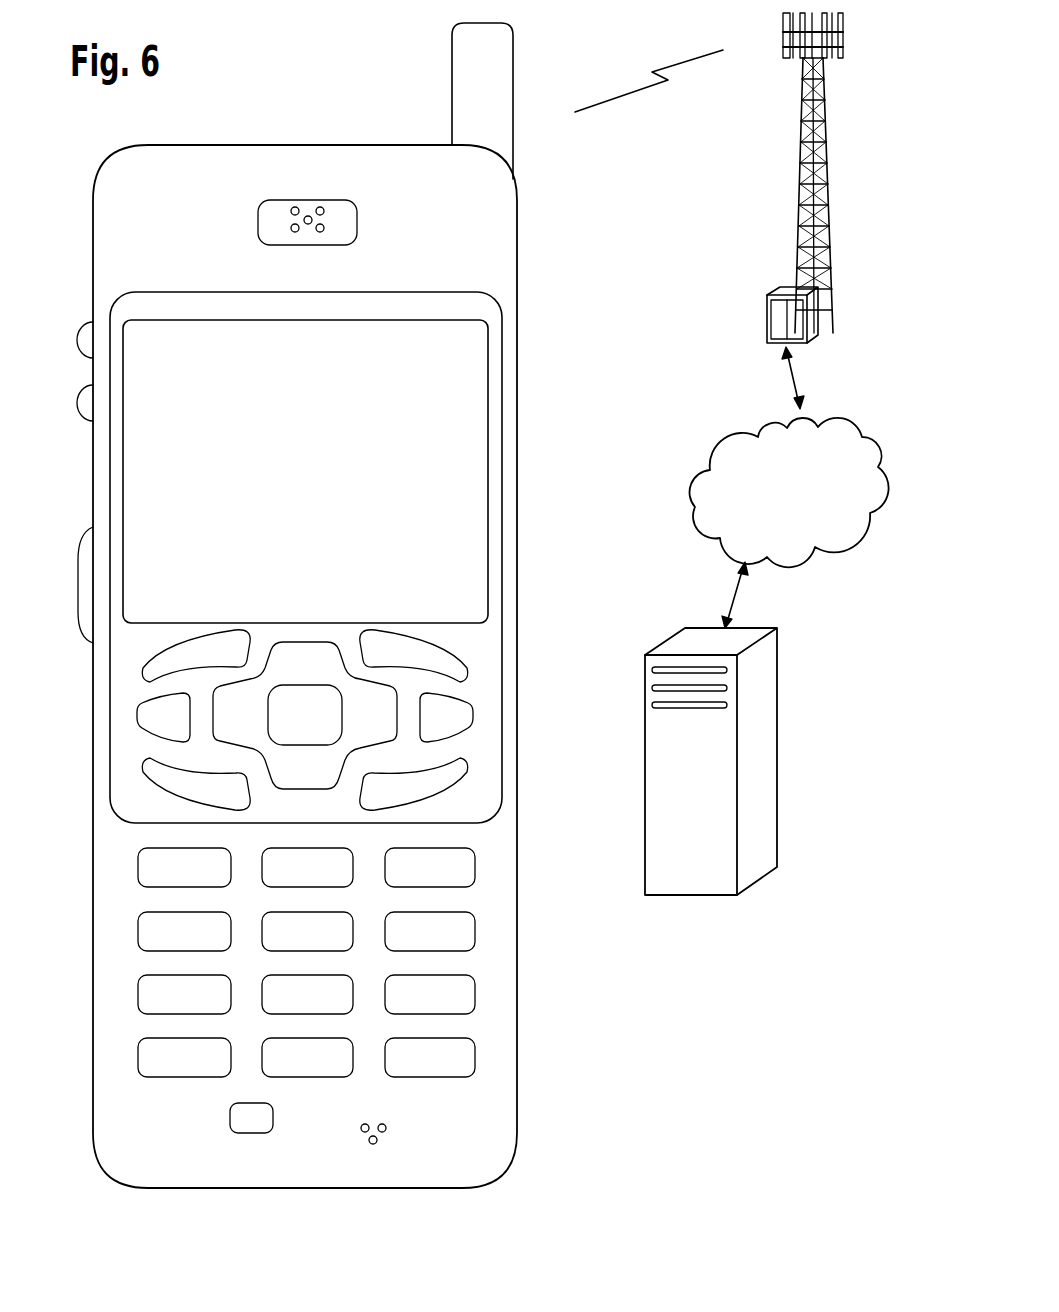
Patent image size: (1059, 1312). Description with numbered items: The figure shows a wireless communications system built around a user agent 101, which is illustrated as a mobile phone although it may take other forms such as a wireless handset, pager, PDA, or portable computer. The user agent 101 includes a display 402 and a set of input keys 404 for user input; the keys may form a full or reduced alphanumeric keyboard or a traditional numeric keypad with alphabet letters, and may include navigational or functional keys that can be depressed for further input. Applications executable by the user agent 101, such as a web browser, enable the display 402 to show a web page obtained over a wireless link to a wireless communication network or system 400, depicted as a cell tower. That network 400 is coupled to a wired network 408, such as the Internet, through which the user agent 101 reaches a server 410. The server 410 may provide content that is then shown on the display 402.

The user agent (UA) 101 is at (140, 1186).
The display 402 is at (491, 333).
The input keys 404 is at (530, 630).
The wireless communication network or system 400 is at (798, 193).
The wired network 408 is at (712, 540).
The server 410 is at (688, 896).